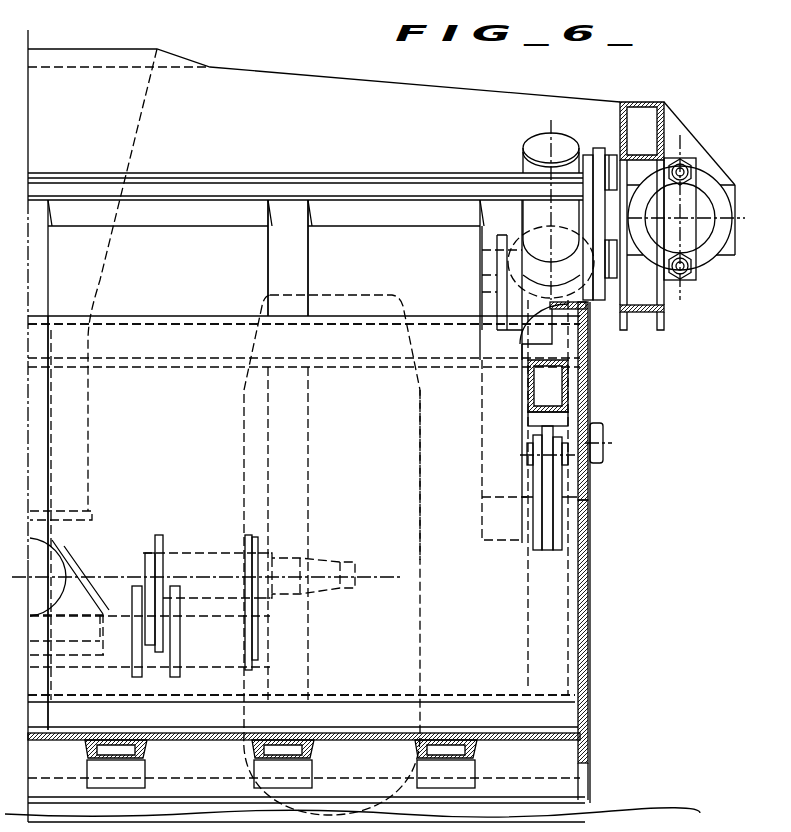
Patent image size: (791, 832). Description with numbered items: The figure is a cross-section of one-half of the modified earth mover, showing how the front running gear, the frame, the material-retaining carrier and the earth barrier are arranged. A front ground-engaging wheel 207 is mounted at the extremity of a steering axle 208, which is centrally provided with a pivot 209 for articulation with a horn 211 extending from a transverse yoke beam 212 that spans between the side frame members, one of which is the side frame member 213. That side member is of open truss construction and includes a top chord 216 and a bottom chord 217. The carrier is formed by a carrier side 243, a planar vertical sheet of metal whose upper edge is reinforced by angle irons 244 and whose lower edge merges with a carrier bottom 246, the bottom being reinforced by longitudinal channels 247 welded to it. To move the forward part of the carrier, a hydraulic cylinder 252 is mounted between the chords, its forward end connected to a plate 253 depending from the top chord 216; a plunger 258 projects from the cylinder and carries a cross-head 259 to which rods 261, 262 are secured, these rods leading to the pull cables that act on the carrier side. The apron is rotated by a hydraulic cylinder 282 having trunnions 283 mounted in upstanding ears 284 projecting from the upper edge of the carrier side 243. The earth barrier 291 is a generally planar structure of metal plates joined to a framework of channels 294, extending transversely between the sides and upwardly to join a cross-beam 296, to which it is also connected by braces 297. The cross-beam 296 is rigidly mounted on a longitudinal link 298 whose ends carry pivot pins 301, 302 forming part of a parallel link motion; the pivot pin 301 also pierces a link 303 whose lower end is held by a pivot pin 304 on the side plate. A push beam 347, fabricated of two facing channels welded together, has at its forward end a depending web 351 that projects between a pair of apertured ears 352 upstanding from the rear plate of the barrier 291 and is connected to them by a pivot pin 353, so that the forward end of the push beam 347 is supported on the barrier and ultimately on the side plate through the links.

The front ground-engaging wheel 207 is at (244, 493).
The steering axle 208 is at (209, 560).
The pivot 209 is at (73, 527).
The horn 211 is at (102, 266).
The transverse yoke beam 212 is at (261, 78).
The side frame member 213 is at (652, 86).
The top chord 216 is at (664, 104).
The bottom chord 217 is at (666, 320).
The carrier side 243 is at (585, 608).
The angle iron 244 is at (552, 345).
The carrier bottom 246 is at (352, 738).
The channel 247 is at (262, 768).
The hydraulic cylinder 252 is at (718, 214).
The plate 253 is at (733, 190).
The plunger 258 is at (705, 238).
The cross-head 259 is at (700, 176).
The rod 261 is at (689, 166).
The rod 262 is at (692, 273).
The hydraulic cylinder 282 is at (525, 151).
The trunnion 283 is at (482, 250).
The upstanding ear 284 is at (492, 292).
The earth barrier 291 is at (192, 446).
The channel 294 is at (195, 319).
The cross-beam 296 is at (346, 180).
The brace 297 is at (300, 270).
The longitudinal link 298 is at (593, 150).
The pivot pin 301 is at (644, 132).
The pivot pin 302 is at (612, 268).
The link 303 is at (590, 357).
The pivot pin 304 is at (605, 447).
The push beam 347 is at (560, 382).
The depending web 351 is at (550, 432).
The apertured ear 352 is at (540, 493).
The pivot pin 353 is at (530, 455).